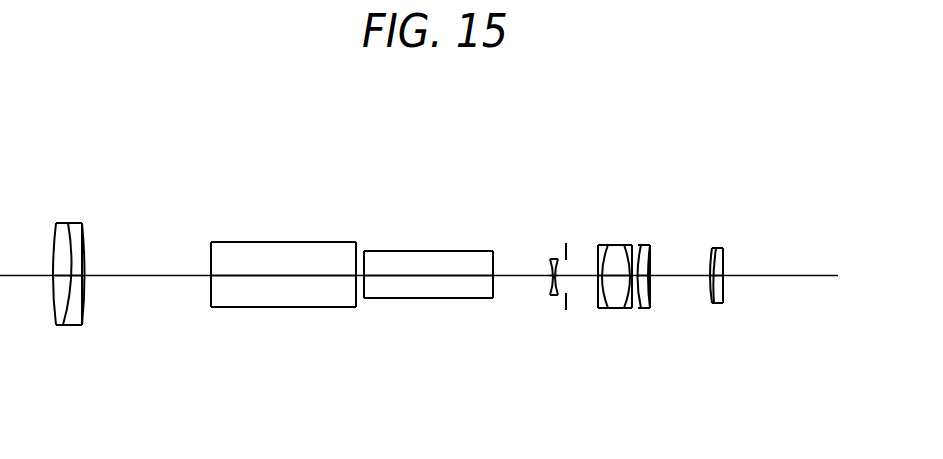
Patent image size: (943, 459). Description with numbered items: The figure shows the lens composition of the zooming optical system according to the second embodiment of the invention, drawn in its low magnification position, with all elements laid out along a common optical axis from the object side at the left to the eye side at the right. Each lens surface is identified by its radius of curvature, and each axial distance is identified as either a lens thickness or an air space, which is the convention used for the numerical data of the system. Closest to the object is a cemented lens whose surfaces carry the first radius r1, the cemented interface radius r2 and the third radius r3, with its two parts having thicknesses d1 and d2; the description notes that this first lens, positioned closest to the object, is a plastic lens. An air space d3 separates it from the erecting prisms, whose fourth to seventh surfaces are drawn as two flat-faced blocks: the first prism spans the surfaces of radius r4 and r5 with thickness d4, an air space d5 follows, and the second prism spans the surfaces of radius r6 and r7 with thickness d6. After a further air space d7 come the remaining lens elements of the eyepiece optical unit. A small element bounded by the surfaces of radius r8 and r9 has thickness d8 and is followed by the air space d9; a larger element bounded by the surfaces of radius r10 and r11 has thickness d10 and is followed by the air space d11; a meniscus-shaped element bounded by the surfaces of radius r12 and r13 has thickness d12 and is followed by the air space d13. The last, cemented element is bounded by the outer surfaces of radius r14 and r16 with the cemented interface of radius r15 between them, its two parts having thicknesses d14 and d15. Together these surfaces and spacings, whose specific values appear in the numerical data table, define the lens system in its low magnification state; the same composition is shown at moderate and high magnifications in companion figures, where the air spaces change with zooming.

The first lens surface radius of curvature r1 is at (55, 227).
The second lens surface radius of curvature r2 is at (66, 224).
The third lens surface radius of curvature r3 is at (83, 227).
The fourth surface radius of curvature r4 is at (211, 250).
The fifth surface radius of curvature r5 is at (356, 245).
The sixth surface radius of curvature r6 is at (363, 253).
The seventh surface radius of curvature r7 is at (494, 256).
The eighth lens surface radius of curvature r8 is at (550, 262).
The ninth lens surface radius of curvature r9 is at (560, 260).
The tenth lens surface radius of curvature r10 is at (596, 255).
The eleventh lens surface radius of curvature r11 is at (608, 250).
The twelfth lens surface radius of curvature r12 is at (633, 247).
The thirteenth lens surface radius of curvature r13 is at (642, 252).
The fourteenth lens surface radius of curvature r14 is at (655, 255).
The fifteenth lens surface radius of curvature r15 is at (708, 255).
The sixteenth lens surface radius of curvature r16 is at (727, 250).
The first lens thickness d1 is at (68, 327).
The second lens thickness d2 is at (83, 326).
The third air space d3 is at (144, 276).
The fourth thickness d4 is at (283, 276).
The fifth air space d5 is at (360, 277).
The sixth thickness d6 is at (428, 277).
The seventh air space d7 is at (525, 277).
The eighth lens thickness d8 is at (547, 280).
The ninth air space d9 is at (578, 280).
The tenth lens thickness d10 is at (597, 280).
The eleventh air space d11 is at (620, 280).
The twelfth lens thickness d12 is at (637, 280).
The thirteenth air space d13 is at (650, 280).
The fourteenth lens thickness d14 is at (680, 280).
The fifteenth lens thickness d15 is at (717, 283).